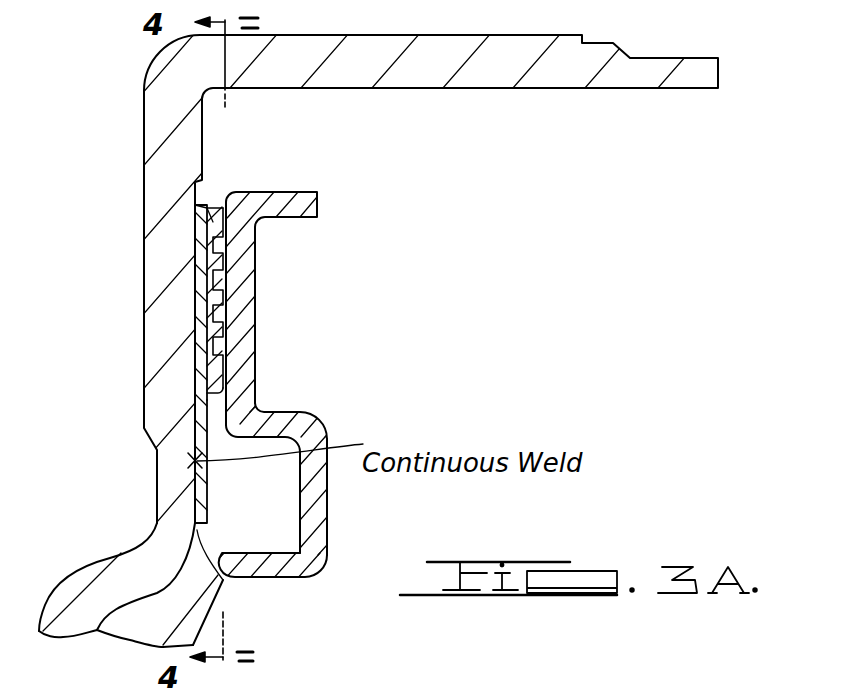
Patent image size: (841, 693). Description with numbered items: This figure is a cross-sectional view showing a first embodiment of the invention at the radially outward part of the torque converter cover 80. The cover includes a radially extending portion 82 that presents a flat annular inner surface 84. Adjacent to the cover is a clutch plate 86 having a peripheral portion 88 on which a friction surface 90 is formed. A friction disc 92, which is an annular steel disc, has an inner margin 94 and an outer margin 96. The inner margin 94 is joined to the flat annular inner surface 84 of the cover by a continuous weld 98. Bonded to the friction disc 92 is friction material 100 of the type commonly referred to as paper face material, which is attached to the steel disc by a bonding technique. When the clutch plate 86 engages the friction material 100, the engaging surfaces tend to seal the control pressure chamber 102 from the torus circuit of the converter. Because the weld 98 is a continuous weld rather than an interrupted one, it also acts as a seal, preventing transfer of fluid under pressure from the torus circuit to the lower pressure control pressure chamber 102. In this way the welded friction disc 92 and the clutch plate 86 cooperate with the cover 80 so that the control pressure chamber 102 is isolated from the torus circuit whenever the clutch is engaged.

The radially outward part of the torque converter cover 80 is at (417, 70).
The radially extending portion 82 is at (167, 331).
The flat annular inner surface 84 is at (193, 298).
The clutch plate 86 is at (295, 422).
The peripheral portion 88 is at (243, 273).
The friction surface 90 is at (225, 262).
The friction disc 92 is at (197, 425).
The inner margin 94 is at (223, 580).
The outer margin 96 is at (202, 213).
The continuous weld 98 is at (190, 462).
The friction material 100 is at (217, 333).
The control pressure chamber 102 is at (277, 515).